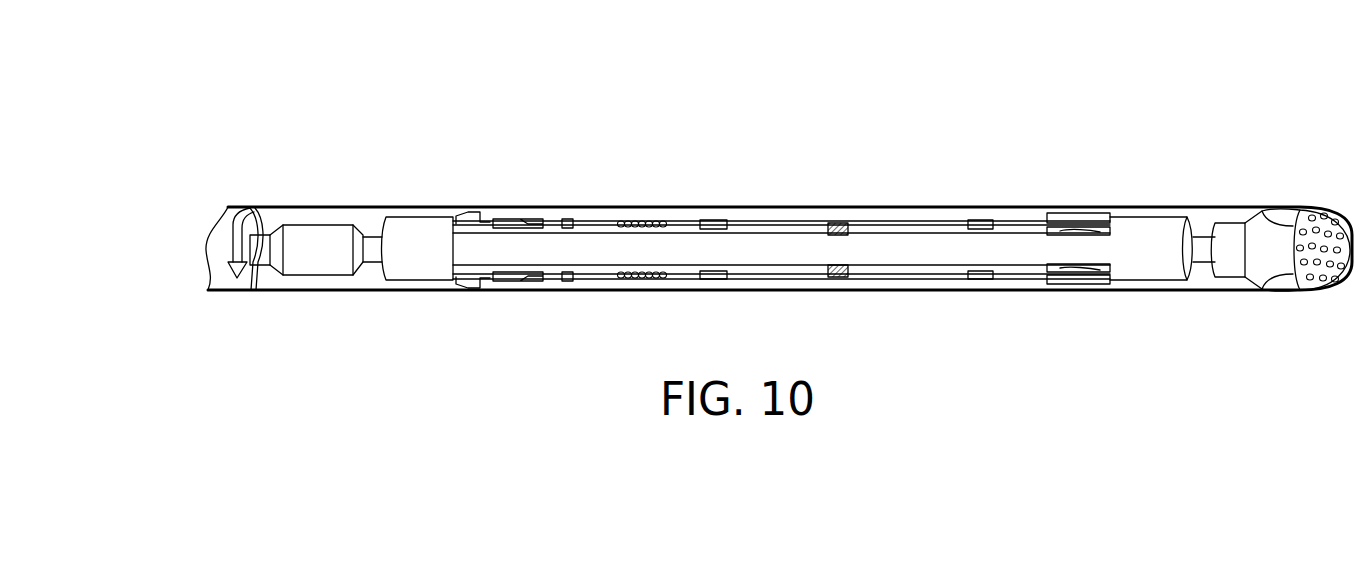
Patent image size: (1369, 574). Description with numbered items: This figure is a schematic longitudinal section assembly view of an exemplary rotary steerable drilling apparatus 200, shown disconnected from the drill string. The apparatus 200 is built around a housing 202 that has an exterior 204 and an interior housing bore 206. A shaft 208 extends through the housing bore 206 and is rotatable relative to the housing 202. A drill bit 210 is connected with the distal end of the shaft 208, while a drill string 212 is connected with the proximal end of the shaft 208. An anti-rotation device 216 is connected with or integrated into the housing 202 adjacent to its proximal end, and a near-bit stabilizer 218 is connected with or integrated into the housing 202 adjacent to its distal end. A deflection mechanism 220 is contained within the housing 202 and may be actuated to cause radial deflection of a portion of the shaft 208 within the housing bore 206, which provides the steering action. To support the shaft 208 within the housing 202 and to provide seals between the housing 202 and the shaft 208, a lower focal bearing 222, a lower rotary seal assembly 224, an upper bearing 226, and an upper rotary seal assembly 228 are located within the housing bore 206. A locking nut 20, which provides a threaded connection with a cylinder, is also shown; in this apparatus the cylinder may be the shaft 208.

The rotary steerable drilling apparatus 200 is at (773, 196).
The housing 202 is at (1190, 140).
The exterior 204 is at (429, 292).
The interior housing bore 206 is at (876, 228).
The shaft 208 is at (773, 242).
The drill bit 210 is at (1292, 283).
The drill string 212 is at (253, 292).
The anti-rotation device 216 is at (488, 206).
The near-bit stabilizer 218 is at (1090, 213).
The locking nut 20 is at (540, 216).
The deflection mechanism 220 is at (843, 282).
The lower focal bearing 222 is at (1088, 292).
The lower rotary seal assembly 224 is at (1170, 273).
The upper bearing 226 is at (516, 290).
The upper rotary seal assembly 228 is at (384, 292).